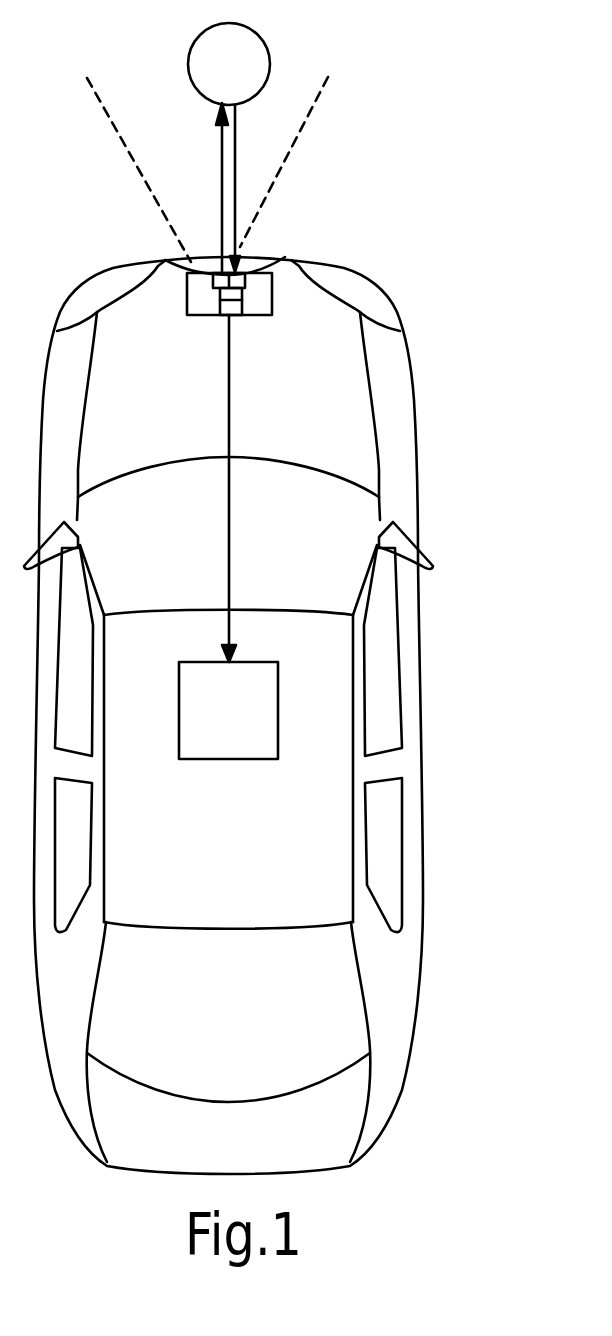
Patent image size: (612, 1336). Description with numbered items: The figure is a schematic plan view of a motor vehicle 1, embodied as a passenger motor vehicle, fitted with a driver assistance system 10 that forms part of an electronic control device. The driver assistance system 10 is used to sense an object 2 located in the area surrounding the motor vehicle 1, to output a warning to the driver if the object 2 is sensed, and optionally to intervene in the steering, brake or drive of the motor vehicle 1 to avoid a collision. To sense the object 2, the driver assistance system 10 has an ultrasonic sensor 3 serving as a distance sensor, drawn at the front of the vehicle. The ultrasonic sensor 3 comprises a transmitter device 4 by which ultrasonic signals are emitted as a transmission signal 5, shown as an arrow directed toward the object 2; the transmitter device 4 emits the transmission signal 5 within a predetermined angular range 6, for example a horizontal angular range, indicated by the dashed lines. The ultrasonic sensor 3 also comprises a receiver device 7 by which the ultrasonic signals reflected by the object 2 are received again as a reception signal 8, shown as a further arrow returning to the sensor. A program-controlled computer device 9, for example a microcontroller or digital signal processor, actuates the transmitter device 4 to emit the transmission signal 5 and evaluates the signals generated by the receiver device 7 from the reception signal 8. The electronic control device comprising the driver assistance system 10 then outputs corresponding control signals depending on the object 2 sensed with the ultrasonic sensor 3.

The motor vehicle 1 is at (92, 240).
The object 2 is at (265, 40).
The ultrasonic sensor 3 is at (273, 297).
The transmitter device 4 is at (220, 284).
The transmission signal 5 is at (220, 190).
The predetermined angular range 6 is at (117, 132).
The receiver device 7 is at (243, 273).
The reception signal 8 is at (238, 143).
The computer device 9 is at (233, 315).
The driver assistance system 10 is at (273, 713).